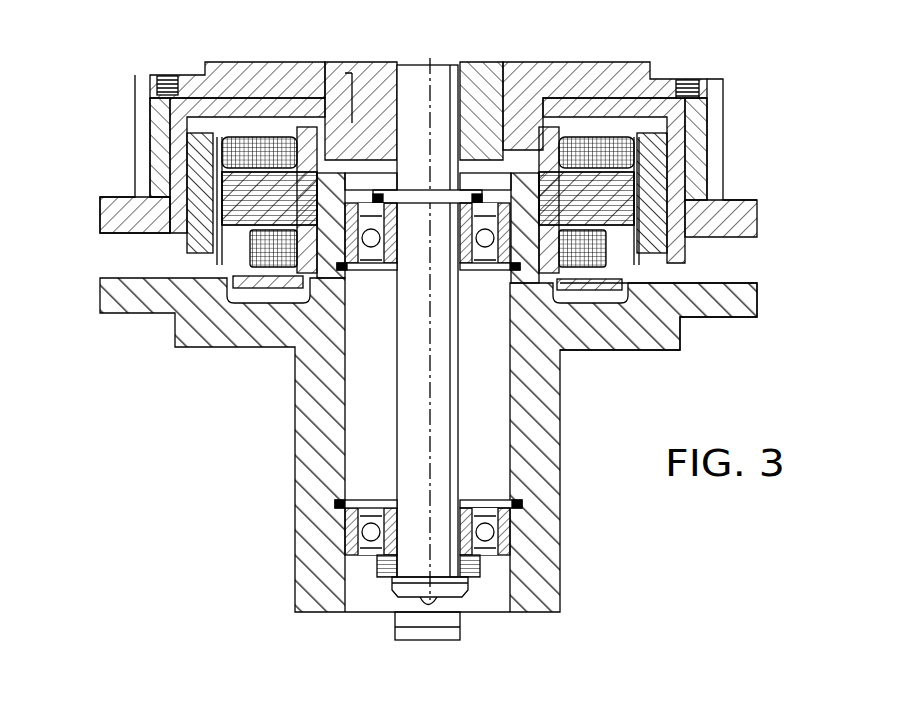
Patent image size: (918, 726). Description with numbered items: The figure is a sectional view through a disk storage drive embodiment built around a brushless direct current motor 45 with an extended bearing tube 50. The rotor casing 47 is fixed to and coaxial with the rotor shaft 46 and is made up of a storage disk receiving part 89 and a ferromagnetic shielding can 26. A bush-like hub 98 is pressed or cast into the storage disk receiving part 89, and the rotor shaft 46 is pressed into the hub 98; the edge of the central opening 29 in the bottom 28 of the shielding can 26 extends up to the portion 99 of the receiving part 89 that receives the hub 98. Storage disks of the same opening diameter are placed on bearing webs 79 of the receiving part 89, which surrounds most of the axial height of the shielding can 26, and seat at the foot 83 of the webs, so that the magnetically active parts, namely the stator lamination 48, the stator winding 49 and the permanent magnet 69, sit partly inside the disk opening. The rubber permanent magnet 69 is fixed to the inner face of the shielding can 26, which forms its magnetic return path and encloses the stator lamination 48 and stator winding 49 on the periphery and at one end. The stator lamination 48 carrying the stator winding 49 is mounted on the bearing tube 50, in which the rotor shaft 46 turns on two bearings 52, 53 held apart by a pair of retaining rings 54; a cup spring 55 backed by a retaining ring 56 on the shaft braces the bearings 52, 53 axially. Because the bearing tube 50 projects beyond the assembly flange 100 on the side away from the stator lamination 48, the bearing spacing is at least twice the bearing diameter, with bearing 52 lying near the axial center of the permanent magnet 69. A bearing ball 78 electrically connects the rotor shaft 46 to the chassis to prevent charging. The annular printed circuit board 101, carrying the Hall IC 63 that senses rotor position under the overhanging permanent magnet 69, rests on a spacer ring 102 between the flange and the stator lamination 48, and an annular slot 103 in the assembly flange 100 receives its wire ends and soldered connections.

The shielding can 26 is at (173, 150).
The bottom 28 is at (268, 78).
The central opening 29 is at (548, 78).
The brushless direct current motor 45 is at (716, 56).
The rotor shaft 46 is at (414, 72).
The rotor casing 47 is at (126, 90).
The stator lamination 48 is at (643, 192).
The stator winding 49 is at (592, 137).
The bearing tube 50 is at (295, 517).
The bearing 52 is at (383, 268).
The bearing 53 is at (507, 535).
The retaining rings 54 is at (510, 268).
The cup spring 55 is at (380, 570).
The retaining ring 56 is at (465, 578).
The Hall IC 63 is at (237, 252).
The permanent magnet 69 is at (193, 183).
The bearing ball 78 is at (418, 603).
The bearing webs 79 is at (713, 145).
The shoulder foot 83 is at (733, 238).
The storage disk receiving part 89 is at (231, 72).
The bush-like hub 98 is at (487, 78).
The portion 99 is at (338, 72).
The assembly flange 100 is at (663, 328).
The printed circuit board 101 is at (597, 287).
The spacer ring 102 is at (337, 307).
The annular slot 103 is at (273, 297).